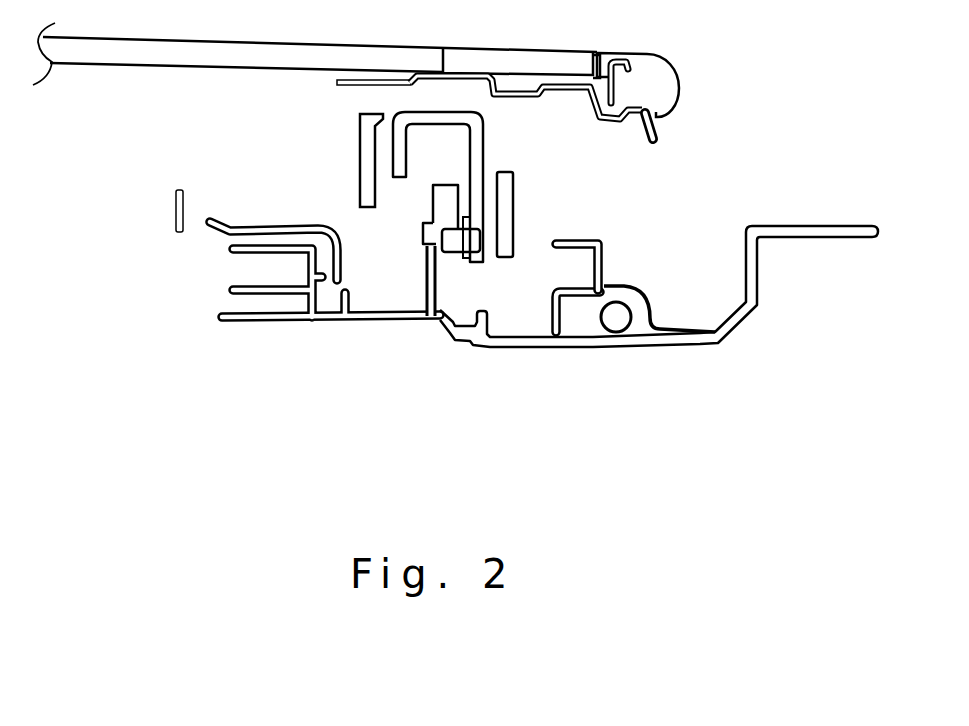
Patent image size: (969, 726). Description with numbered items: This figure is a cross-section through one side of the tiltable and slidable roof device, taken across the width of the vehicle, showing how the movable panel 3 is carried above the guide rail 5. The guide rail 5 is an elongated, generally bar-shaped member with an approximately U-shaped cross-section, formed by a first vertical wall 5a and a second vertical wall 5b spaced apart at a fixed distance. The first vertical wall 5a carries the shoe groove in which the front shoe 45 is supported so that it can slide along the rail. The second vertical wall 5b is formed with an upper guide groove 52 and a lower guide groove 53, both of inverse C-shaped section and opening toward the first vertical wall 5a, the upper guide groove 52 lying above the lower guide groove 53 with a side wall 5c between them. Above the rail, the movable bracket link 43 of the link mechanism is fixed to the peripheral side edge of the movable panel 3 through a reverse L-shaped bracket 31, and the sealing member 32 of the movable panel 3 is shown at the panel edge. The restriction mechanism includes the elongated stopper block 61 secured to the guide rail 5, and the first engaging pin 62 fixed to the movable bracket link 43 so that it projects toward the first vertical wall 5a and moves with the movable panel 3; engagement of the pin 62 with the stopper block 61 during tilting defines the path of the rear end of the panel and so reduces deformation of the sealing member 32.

The movable panel 3 is at (507, 63).
The L-shaped bracket 31 is at (547, 83).
The sealing member 32 is at (663, 100).
The movable bracket link 43 is at (440, 117).
The front shoe 45 is at (510, 215).
The guide rail 5 is at (684, 345).
The first vertical wall 5a is at (423, 276).
The second vertical wall 5b is at (625, 296).
The side wall 5c is at (553, 300).
The upper guide groove 52 is at (582, 262).
The lower guide groove 53 is at (596, 328).
The stopper block 61 is at (450, 190).
The first engaging pin 62 is at (452, 243).